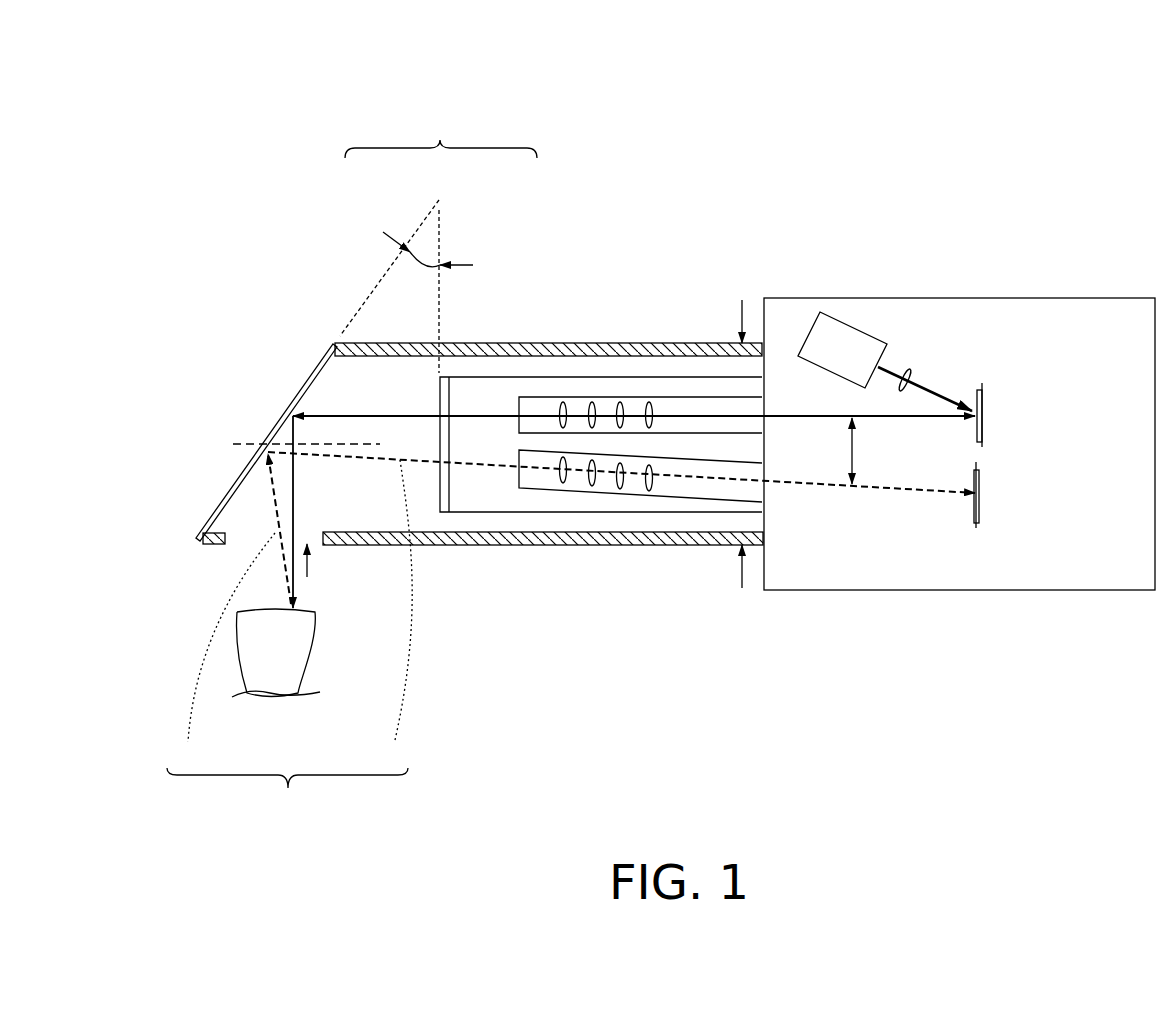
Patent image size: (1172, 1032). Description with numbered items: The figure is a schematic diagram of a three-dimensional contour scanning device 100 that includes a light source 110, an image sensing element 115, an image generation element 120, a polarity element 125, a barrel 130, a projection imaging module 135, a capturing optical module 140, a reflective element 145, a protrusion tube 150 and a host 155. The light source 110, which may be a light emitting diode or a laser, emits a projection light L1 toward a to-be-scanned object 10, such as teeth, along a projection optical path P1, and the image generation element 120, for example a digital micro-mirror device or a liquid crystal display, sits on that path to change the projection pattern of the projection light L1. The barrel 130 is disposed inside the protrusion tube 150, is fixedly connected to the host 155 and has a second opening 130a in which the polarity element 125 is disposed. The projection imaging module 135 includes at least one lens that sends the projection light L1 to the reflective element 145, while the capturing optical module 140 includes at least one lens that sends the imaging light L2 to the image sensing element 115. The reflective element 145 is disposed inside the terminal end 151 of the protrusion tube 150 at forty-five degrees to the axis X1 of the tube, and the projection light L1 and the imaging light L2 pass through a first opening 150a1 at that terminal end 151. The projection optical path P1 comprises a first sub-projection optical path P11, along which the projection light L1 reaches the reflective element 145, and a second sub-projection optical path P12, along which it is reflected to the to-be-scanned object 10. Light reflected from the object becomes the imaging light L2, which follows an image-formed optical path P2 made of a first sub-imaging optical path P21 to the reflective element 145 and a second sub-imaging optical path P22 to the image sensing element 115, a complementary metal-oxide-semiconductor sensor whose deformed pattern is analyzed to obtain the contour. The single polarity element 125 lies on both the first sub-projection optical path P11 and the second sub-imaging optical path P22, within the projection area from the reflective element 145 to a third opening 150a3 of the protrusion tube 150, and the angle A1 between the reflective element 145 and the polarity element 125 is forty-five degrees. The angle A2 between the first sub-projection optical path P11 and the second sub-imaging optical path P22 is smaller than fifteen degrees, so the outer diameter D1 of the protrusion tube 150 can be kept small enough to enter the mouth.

The three-dimensional contour scanning device 100 is at (363, 118).
The to-be-scanned object 10 is at (310, 663).
The light source 110 is at (857, 318).
The image sensing element 115 is at (981, 494).
The image generation element 120 is at (984, 414).
The polarity element 125 is at (440, 397).
The barrel 130 is at (530, 512).
The second opening 130a is at (440, 490).
The projection imaging module 135 is at (649, 397).
The capturing optical module 140 is at (563, 488).
The reflective element 145 is at (277, 425).
The protrusion tube 150 is at (700, 545).
The first opening 150a1 is at (307, 577).
The third opening 150a3 is at (764, 524).
The terminal end 151 is at (209, 547).
The host 155 is at (1065, 298).
The projection light L1 is at (947, 392).
The imaging light L2 is at (273, 505).
The projection optical path P1 is at (441, 136).
The first sub-projection optical path P11 is at (680, 413).
The second sub-projection optical path P12 is at (334, 343).
The image-formed optical path P2 is at (287, 793).
The first sub-imaging optical path P21 is at (223, 652).
The second sub-imaging optical path P22 is at (390, 616).
The angle between reflective element and polarity element A1 is at (414, 268).
The angle between first sub-projection optical path and second sub-imaging optical p A2 is at (869, 451).
The outer diameter D1 is at (742, 431).
The axis X1 is at (302, 429).